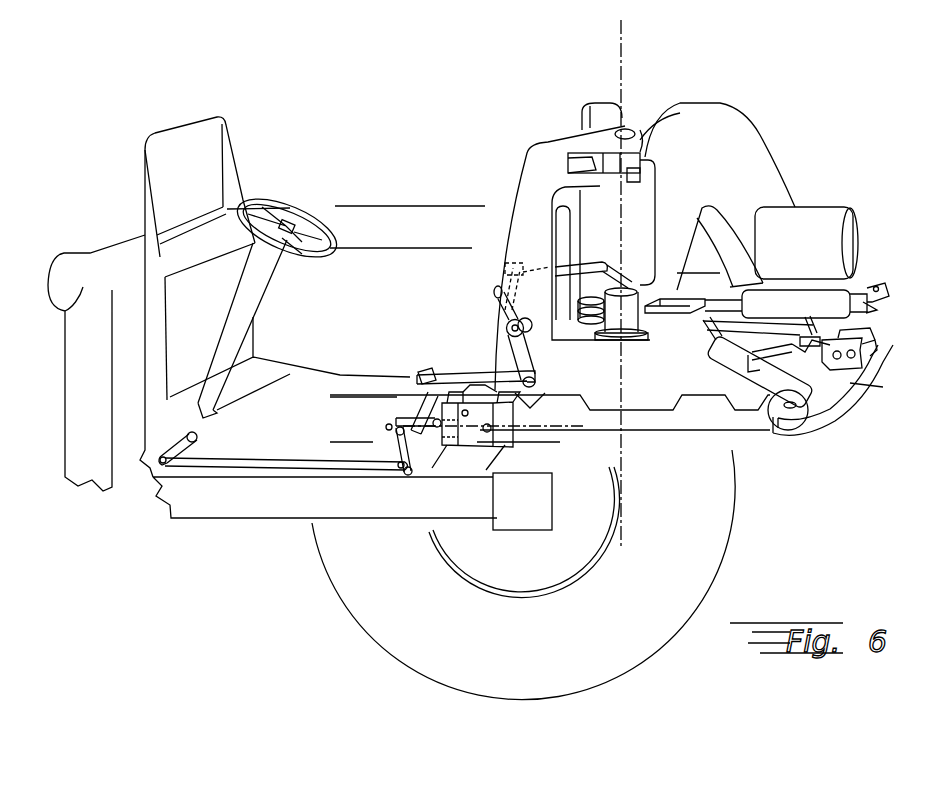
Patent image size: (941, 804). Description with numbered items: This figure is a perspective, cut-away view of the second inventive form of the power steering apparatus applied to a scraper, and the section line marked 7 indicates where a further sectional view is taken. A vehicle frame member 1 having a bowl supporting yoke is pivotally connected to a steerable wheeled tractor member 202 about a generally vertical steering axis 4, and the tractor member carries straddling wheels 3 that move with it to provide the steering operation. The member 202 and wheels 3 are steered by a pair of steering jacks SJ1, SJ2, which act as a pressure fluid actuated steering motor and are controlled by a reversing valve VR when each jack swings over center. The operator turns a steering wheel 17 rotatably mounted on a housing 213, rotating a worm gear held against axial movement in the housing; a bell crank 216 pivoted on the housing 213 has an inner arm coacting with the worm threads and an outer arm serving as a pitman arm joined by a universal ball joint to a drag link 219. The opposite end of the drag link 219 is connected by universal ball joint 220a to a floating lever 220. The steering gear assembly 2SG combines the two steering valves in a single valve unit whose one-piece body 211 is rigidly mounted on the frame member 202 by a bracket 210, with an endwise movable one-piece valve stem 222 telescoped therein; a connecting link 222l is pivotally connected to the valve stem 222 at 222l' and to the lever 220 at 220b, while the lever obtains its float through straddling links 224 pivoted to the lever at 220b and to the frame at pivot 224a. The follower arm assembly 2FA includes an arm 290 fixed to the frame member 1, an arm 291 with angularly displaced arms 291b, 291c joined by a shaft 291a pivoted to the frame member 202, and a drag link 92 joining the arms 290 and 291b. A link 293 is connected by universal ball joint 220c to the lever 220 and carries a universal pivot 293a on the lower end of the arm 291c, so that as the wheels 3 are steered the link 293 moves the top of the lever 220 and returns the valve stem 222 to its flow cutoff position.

The steering wheel 17 is at (323, 231).
The housing 213 is at (262, 292).
The bell crank 216 is at (197, 447).
The drag link 219 is at (257, 465).
The tractor member 202 is at (247, 520).
The steering gear assembly 2SG is at (449, 293).
The arm 291 is at (507, 327).
The shaft 291a is at (510, 322).
The arm 291b is at (514, 282).
The arm 291c is at (529, 343).
The link 293 is at (532, 368).
The universal pivot 293a is at (537, 377).
The follower arm assembly 2FA is at (487, 359).
The bracket 210 is at (467, 397).
The floating lever 220 is at (380, 440).
The universal ball joint 220a is at (377, 470).
The pivot 220b is at (387, 423).
The universal ball joint 220c is at (427, 377).
The valve stem 222 is at (440, 452).
The connecting link 222l is at (398, 413).
The pivot 222l' is at (449, 388).
The straddling links 224 is at (406, 453).
The pivot 224a is at (402, 477).
The valve body 211 is at (490, 432).
The drag link 92 is at (587, 266).
The arm 290 is at (633, 278).
The vehicle frame member 1 is at (590, 305).
The steering jack SJ1 is at (796, 314).
The steering jack SJ2 is at (717, 362).
The reversing valve VR is at (877, 335).
The wheels 3 is at (730, 508).
The steering axis 4 is at (621, 42).
The section line 7- 7 is at (562, 434).